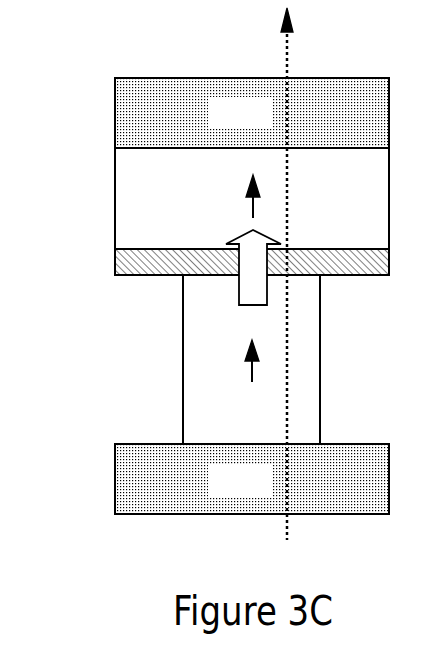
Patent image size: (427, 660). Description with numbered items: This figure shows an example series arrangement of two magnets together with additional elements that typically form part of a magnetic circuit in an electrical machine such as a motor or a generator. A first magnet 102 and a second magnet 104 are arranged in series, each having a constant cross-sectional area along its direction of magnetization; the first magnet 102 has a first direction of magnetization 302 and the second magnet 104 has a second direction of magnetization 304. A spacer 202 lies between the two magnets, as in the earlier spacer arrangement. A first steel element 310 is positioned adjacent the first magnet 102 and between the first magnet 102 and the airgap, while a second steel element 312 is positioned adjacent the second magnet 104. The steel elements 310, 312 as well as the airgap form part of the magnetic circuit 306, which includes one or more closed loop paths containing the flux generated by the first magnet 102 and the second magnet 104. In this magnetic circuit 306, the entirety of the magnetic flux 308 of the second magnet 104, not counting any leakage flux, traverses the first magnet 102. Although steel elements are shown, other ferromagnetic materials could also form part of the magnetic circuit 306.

The first steel element 310 is at (115, 113).
The first magnet 102 is at (115, 196).
The spacer 202 is at (113, 262).
The magnetic flux 308 is at (239, 304).
The second magnet 104 is at (183, 383).
The second steel element 312 is at (115, 478).
The first direction of magnetization 302 is at (246, 204).
The second direction of magnetization 304 is at (250, 375).
The magnetic circuit 306 is at (290, 185).